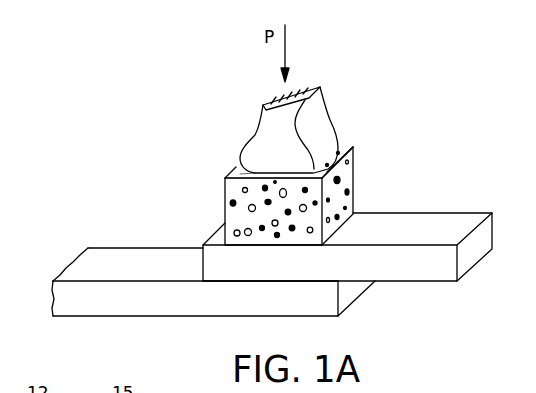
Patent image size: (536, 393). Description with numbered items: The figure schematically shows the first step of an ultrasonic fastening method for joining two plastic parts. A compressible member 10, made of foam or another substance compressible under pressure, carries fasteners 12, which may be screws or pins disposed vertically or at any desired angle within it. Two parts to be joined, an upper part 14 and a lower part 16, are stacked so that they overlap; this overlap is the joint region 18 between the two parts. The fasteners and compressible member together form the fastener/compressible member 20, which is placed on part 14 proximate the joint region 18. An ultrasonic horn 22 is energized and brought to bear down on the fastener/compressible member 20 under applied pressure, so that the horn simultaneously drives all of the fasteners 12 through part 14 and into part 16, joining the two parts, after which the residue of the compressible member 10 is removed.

The compressible member 10 is at (355, 189).
The fasteners 12 is at (240, 175).
The part 14 is at (479, 254).
The part 16 is at (361, 287).
The joint region 18 is at (234, 284).
The fastener/compressible member 20 is at (375, 158).
The ultrasonic horn 22 is at (335, 123).